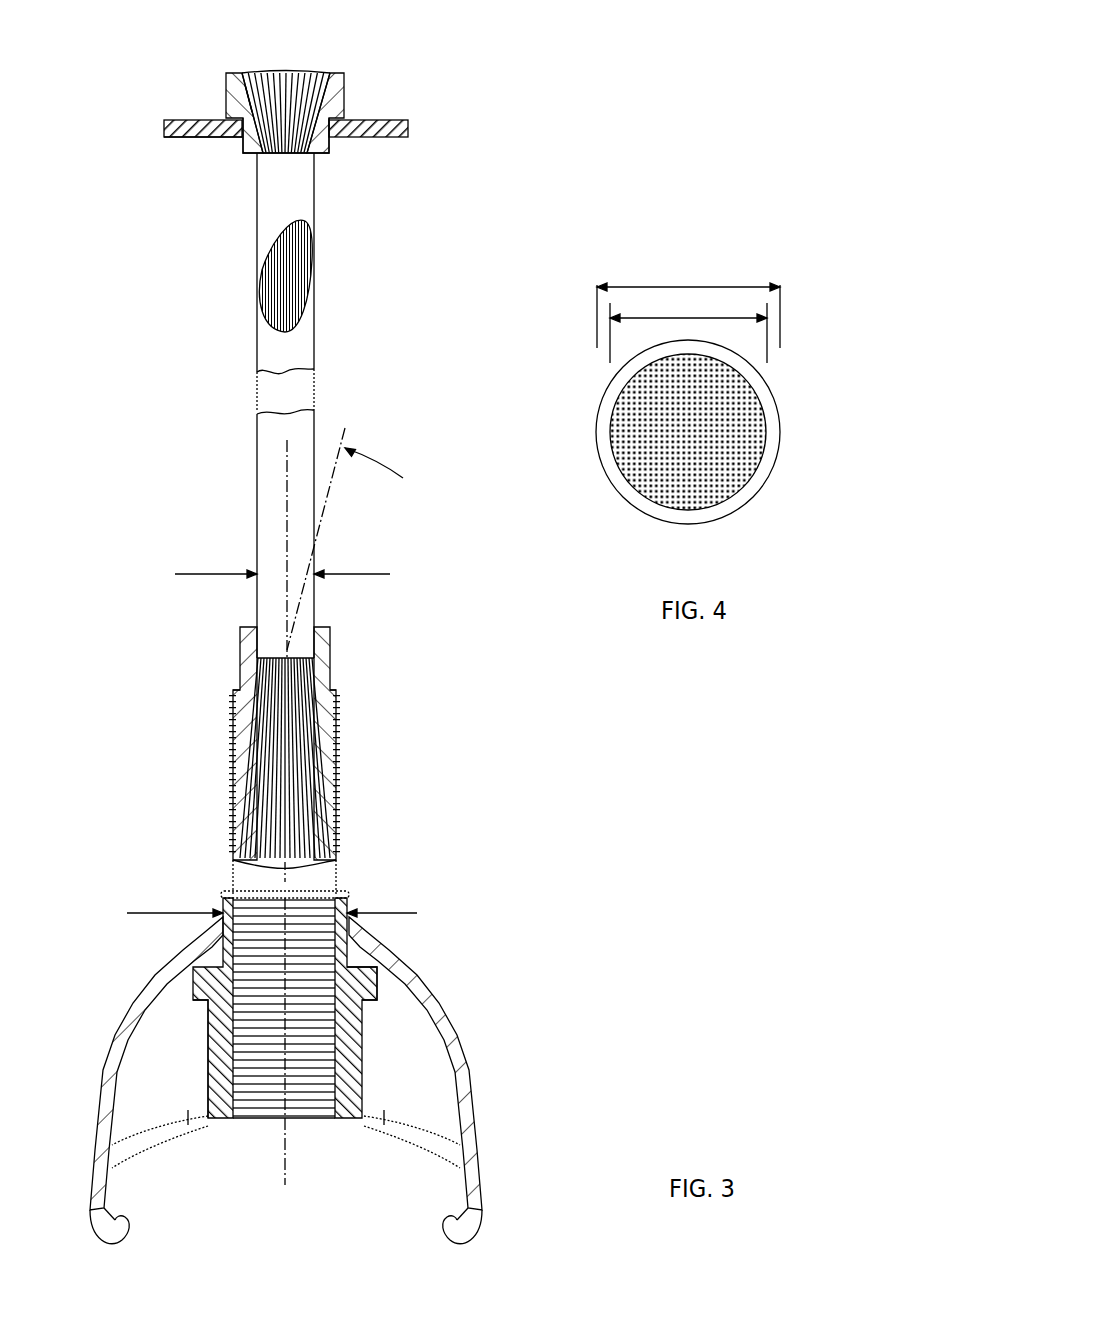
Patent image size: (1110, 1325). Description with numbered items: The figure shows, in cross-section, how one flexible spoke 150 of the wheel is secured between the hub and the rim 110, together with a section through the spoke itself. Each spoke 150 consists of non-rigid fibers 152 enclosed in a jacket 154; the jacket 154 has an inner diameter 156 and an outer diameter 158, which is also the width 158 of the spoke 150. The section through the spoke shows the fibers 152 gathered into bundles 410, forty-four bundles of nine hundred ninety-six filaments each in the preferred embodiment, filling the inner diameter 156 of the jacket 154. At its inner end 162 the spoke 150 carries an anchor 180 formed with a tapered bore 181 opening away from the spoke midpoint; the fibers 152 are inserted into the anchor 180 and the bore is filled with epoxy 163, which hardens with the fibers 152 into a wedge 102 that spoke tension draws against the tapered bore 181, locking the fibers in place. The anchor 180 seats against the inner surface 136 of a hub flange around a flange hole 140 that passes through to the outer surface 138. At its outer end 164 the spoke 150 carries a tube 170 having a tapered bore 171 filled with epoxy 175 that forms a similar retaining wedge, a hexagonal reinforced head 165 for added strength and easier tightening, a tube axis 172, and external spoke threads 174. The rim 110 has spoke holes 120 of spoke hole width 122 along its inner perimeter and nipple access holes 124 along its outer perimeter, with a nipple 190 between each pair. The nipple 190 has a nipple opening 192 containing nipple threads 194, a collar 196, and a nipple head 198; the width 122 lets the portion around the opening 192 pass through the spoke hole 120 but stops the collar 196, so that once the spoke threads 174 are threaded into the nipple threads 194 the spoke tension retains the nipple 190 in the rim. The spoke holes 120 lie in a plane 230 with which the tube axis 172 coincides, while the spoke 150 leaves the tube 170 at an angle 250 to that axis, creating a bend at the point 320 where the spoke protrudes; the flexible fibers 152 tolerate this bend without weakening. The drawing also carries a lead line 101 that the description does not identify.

In FIG. 3, the fiber bundle proximal end 101 is at (300, 658).
In FIG. 3, the wedge 102 is at (297, 153).
In FIG. 3, the rim 110 is at (466, 1132).
In FIG. 3, the spoke hole 120 is at (223, 935).
In FIG. 3, the spoke hole width 122 is at (170, 913).
In FIG. 3, the nipple access hole 124 is at (378, 1120).
In FIG. 3, the inner surface 136 is at (176, 120).
In FIG. 3, the outer surface 138 is at (200, 138).
In FIG. 3, the flange hole 140 is at (242, 150).
In FIG. 3, the spoke 150 is at (185, 303).
In FIG. 4, the spoke 150 is at (809, 374).
In FIG. 3, the fibers 152 is at (285, 730).
In FIG. 4, the jacket 154 is at (597, 432).
In FIG. 4, the inner diameter 156 is at (646, 317).
In FIG. 3, the outer diameter 158 is at (180, 574).
In FIG. 4, the outer diameter 158 is at (693, 287).
In FIG. 3, the inner end 162 is at (282, 167).
In FIG. 3, the epoxy 163 is at (298, 72).
In FIG. 3, the outer end 164 is at (239, 637).
In FIG. 3, the reinforced head 165 is at (238, 669).
In FIG. 3, the tube 170 is at (232, 786).
In FIG. 3, the tapered bore 171 is at (308, 743).
In FIG. 3, the tube axis 172 is at (280, 1143).
In FIG. 3, the spoke threads 174 is at (336, 788).
In FIG. 3, the epoxy 175 is at (300, 862).
In FIG. 3, the anchor 180 is at (335, 115).
In FIG. 3, the tapered bore 181 is at (250, 100).
In FIG. 3, the nipple 190 is at (362, 1060).
In FIG. 3, the nipple opening 192 is at (247, 892).
In FIG. 3, the nipple threads 194 is at (295, 1058).
In FIG. 3, the collar 196 is at (377, 972).
In FIG. 3, the nipple head 198 is at (208, 1070).
In FIG. 3, the plane 230 is at (287, 488).
In FIG. 3, the angle 250 is at (287, 440).
In FIG. 3, the point 320 is at (318, 626).
In FIG. 4, the bundles 410 is at (611, 448).